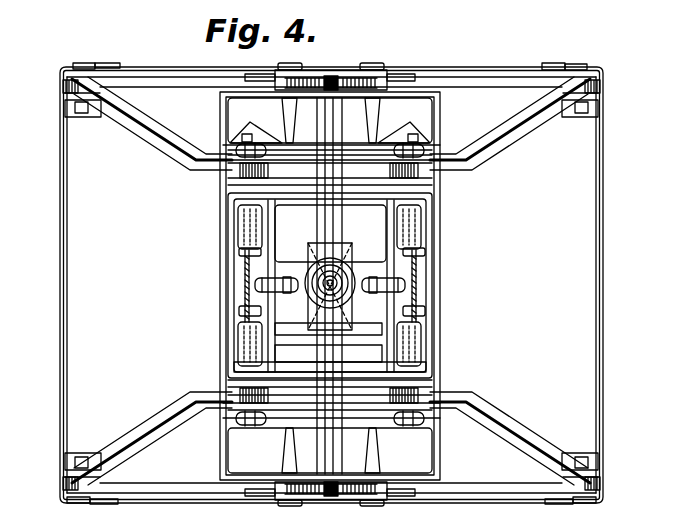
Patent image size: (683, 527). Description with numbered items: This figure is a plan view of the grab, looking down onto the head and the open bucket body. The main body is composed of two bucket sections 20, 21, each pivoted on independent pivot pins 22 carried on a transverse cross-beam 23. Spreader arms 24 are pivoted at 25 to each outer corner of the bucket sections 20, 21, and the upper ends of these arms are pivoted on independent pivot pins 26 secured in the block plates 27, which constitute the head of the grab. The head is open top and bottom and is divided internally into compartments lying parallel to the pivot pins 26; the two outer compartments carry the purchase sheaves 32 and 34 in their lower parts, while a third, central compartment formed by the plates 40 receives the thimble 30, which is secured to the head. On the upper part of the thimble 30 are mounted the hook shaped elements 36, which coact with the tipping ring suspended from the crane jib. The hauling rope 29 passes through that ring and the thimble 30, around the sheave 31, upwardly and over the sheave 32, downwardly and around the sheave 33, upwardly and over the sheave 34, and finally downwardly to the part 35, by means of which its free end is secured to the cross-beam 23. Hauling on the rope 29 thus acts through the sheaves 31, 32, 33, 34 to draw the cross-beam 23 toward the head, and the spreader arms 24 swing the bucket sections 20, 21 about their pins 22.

The bucket section 20 is at (72, 292).
The bucket section 21 is at (575, 305).
The pivot pin 22 is at (375, 66).
The transverse cross-beam 23 is at (440, 335).
The spreader arm 24 is at (160, 135).
The pivot 25 is at (86, 68).
The pivot pin 26 is at (244, 138).
The block plate 27 is at (368, 180).
The hauling rope 29 is at (312, 272).
The thimble 30 is at (445, 240).
The sheave 31 is at (240, 195).
The sheave 32 is at (284, 291).
The sheave 33 is at (440, 350).
The sheave 34 is at (440, 282).
The part 35 is at (445, 210).
The hook shaped element 36 is at (262, 285).
The plate 40 is at (367, 262).